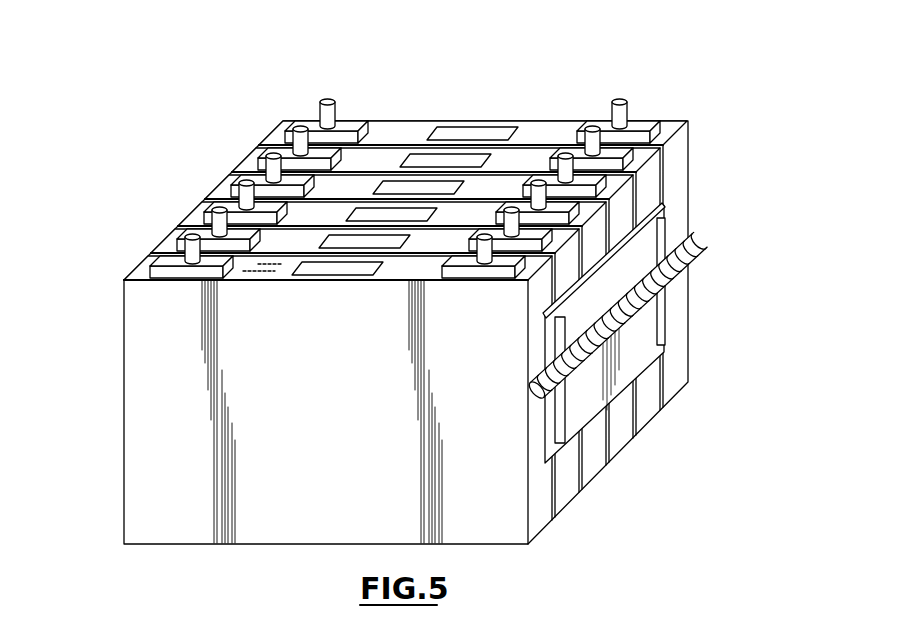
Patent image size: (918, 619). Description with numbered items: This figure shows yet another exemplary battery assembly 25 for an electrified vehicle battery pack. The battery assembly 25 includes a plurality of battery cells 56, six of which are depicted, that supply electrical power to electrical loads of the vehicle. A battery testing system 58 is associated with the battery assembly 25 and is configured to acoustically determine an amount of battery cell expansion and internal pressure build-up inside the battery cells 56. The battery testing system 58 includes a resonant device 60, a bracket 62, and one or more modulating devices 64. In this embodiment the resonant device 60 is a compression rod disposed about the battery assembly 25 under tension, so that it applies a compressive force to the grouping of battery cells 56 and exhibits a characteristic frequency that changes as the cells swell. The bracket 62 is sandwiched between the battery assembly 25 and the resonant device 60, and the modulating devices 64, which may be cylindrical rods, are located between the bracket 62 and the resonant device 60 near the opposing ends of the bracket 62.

The battery assembly 25 is at (455, 287).
The battery cell 56 is at (688, 153).
The battery testing system 58 is at (588, 398).
The resonant device 60 is at (630, 253).
The bracket 62 is at (662, 268).
The modulating device 64 is at (666, 346).